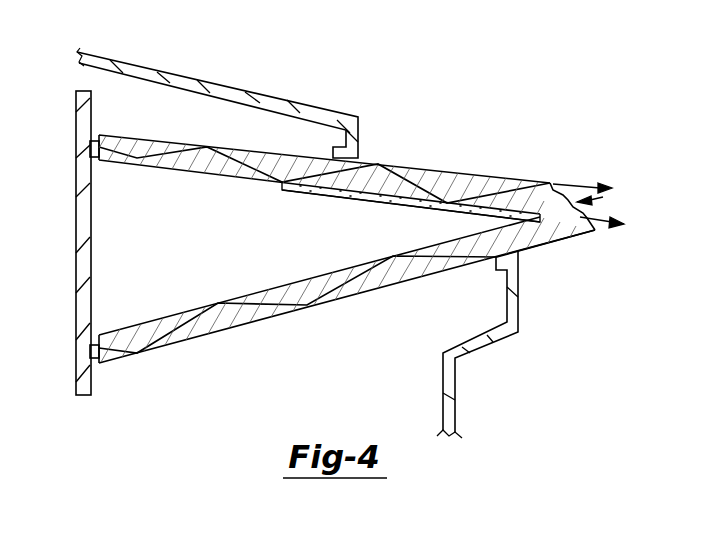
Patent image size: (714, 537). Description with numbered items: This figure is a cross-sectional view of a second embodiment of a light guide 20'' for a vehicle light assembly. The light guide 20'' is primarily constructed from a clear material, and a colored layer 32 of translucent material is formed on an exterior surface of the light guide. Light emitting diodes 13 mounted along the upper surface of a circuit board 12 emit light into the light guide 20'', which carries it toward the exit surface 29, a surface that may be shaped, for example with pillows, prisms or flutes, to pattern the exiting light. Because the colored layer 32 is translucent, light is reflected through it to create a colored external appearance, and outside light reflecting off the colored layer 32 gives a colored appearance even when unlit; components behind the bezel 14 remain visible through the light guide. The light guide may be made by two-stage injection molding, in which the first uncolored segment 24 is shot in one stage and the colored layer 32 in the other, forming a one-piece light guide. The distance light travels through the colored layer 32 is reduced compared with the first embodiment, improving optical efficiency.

The circuit board 12 is at (76, 262).
The light emitting diodes 13 is at (91, 162).
The bezel 14 is at (283, 92).
The light guide 20'' is at (283, 376).
The first uncolored segment 24 is at (318, 304).
The exit surface 29 is at (603, 197).
The colored layer 32 is at (322, 192).